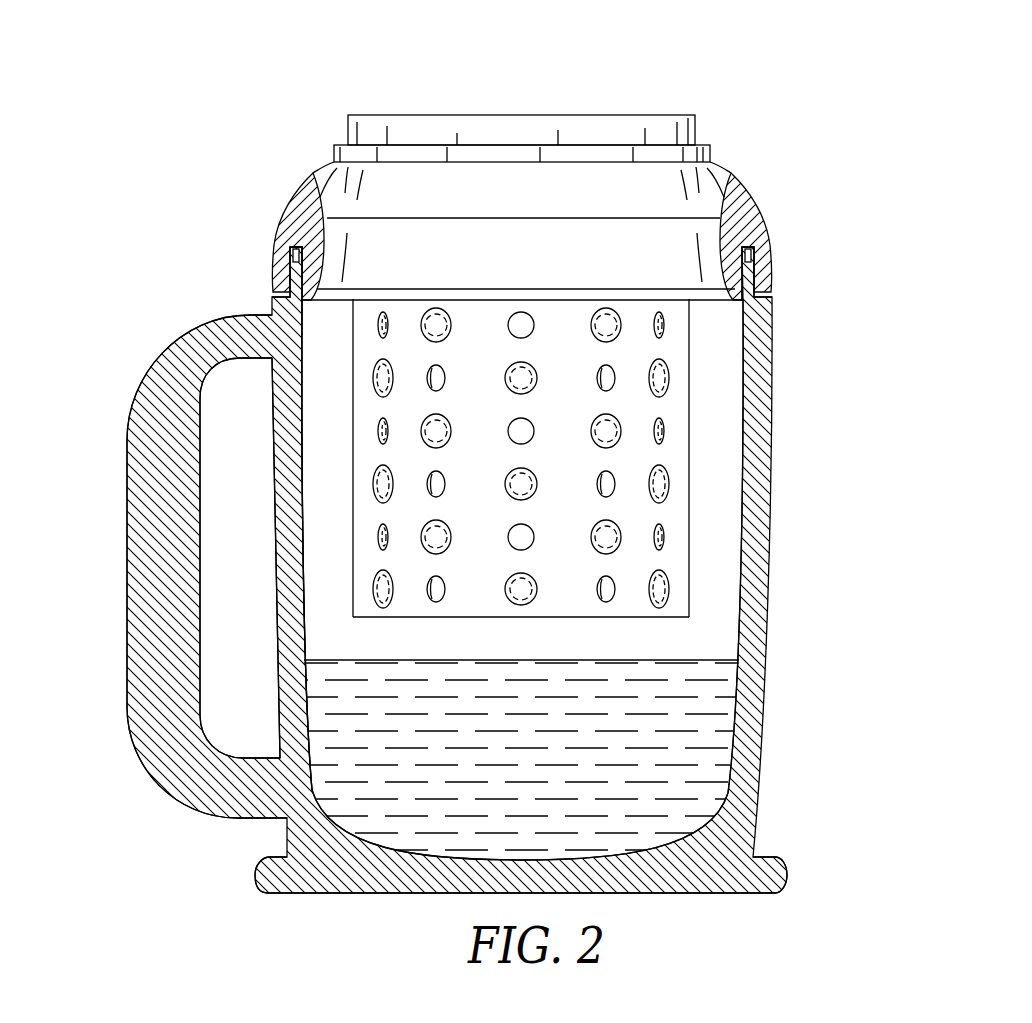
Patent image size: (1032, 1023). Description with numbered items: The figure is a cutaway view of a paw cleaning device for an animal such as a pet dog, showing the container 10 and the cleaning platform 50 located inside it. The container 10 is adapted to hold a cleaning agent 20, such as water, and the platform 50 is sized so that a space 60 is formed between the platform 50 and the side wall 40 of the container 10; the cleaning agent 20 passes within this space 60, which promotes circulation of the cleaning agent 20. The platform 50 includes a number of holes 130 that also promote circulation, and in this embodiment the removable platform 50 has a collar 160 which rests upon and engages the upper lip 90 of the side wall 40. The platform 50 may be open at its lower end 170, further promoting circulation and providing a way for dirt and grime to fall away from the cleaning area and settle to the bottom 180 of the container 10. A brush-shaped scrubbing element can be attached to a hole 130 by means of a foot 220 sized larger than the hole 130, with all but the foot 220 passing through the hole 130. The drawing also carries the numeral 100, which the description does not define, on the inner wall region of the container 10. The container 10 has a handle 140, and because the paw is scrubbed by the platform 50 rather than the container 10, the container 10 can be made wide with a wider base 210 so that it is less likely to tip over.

The container 10 is at (785, 593).
The cleaning agent 20 is at (683, 727).
The side wall 40 is at (272, 640).
The cleaning platform 50 is at (692, 423).
The space 60 is at (320, 482).
The upper lip 90 is at (775, 297).
The inner container 100 is at (694, 528).
The holes 130 is at (447, 483).
The handle 140 is at (132, 387).
The collar 160 is at (720, 125).
The lower end 170 is at (642, 620).
The bottom 180 is at (384, 838).
The base 210 is at (782, 862).
The foot 220 is at (497, 585).